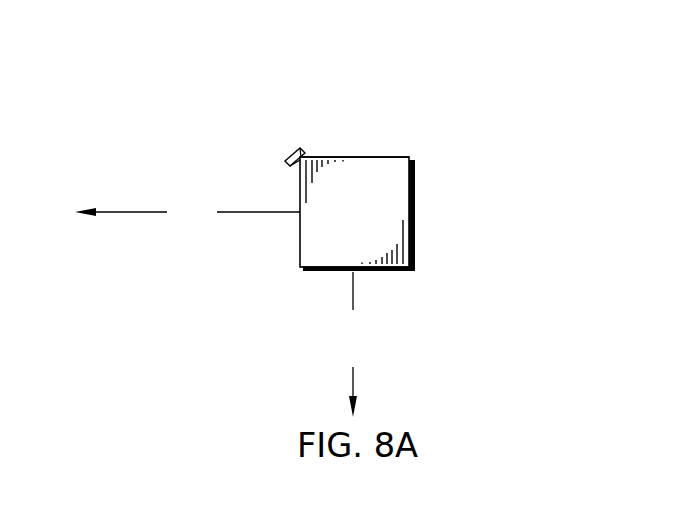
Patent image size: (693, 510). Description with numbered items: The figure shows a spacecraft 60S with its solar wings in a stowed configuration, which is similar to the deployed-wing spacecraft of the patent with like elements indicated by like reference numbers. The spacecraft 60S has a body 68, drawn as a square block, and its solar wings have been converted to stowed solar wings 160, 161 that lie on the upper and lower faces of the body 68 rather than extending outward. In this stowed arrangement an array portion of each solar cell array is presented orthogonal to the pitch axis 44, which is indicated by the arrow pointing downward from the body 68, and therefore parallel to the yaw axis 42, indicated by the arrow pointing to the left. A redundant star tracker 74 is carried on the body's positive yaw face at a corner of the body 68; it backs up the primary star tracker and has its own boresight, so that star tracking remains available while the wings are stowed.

The spacecraft 60S is at (508, 107).
The body 68 is at (415, 192).
The redundant star tracker 74 is at (293, 162).
The stowed solar wing 160 is at (393, 156).
The stowed solar wing 161 is at (392, 270).
The yaw axis 42 is at (187, 213).
The pitch axis 44 is at (356, 344).